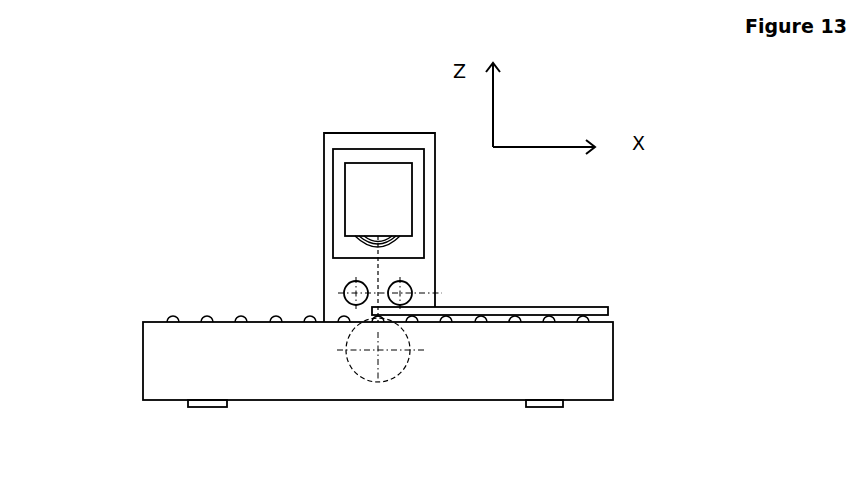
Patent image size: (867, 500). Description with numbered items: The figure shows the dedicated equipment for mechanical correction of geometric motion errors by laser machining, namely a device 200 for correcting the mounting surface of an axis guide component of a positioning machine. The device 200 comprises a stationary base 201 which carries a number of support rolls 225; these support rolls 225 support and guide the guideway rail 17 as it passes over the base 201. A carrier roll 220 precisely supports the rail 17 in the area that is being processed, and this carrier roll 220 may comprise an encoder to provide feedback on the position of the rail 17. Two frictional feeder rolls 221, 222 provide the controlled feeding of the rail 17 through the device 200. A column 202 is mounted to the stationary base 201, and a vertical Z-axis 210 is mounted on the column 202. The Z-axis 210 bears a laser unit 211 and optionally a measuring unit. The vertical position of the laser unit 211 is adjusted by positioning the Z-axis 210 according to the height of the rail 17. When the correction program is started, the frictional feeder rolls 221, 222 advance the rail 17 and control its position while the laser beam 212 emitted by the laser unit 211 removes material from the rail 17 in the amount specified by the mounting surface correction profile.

The device 200 is at (305, 91).
The base 201 is at (153, 363).
The column 202 is at (330, 272).
The vertical Z-axis 210 is at (338, 206).
The laser unit 211 is at (363, 180).
The laser beam 212 is at (378, 277).
The guideway rail 17 is at (560, 309).
The carrier roll 220 is at (363, 378).
The frictional feeder roll 221 is at (402, 304).
The frictional feeder roll 222 is at (345, 292).
The support rolls 225 is at (236, 322).